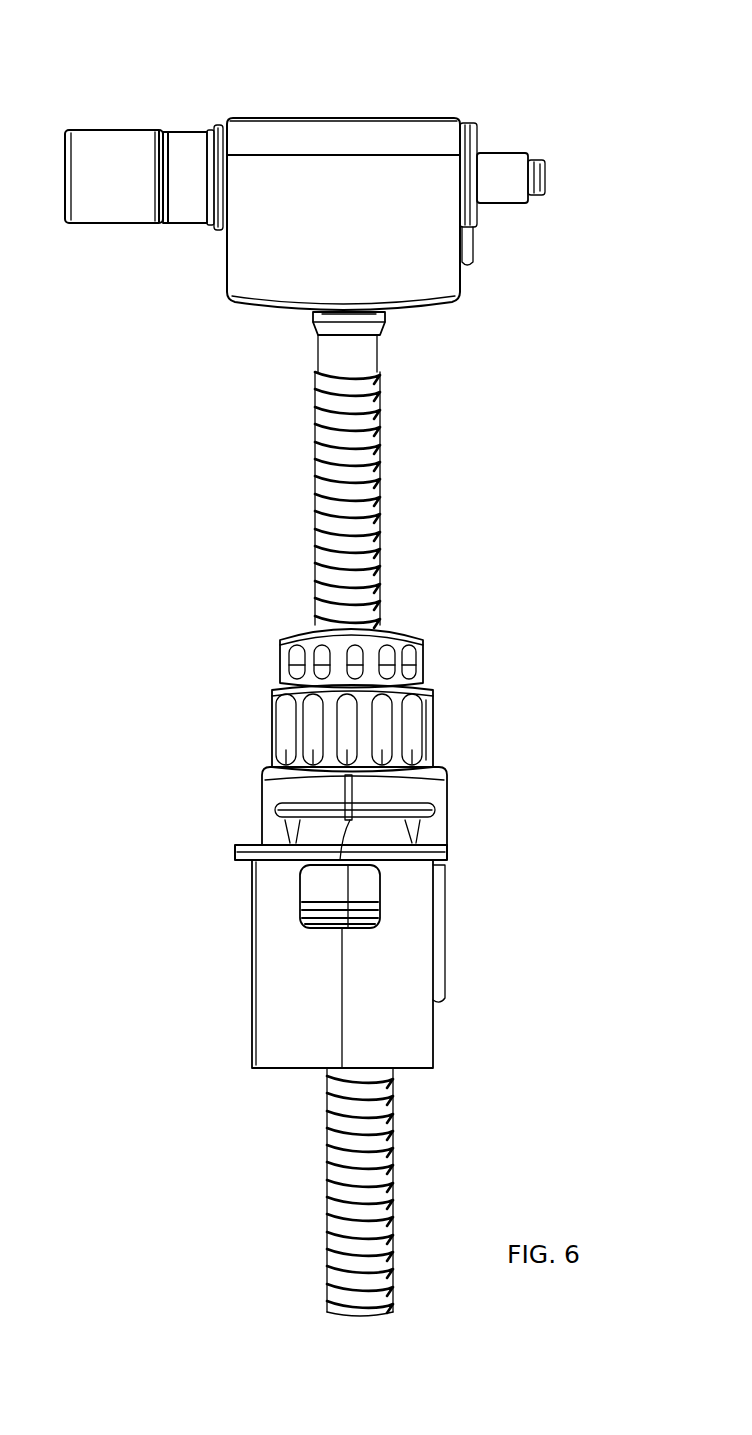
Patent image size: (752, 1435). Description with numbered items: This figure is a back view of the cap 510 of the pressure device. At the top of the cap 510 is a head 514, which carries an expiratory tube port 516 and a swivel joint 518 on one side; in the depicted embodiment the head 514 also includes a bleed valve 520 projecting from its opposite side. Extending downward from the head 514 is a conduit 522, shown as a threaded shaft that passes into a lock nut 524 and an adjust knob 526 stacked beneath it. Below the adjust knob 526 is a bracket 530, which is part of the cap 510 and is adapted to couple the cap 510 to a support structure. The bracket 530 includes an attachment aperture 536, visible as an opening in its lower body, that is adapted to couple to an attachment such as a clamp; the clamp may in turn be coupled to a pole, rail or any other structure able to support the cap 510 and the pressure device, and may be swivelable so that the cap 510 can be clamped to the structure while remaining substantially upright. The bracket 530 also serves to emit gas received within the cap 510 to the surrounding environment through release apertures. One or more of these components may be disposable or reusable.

The cap 510 is at (373, 30).
The head 514 is at (333, 117).
The expiratory tube port 516 is at (100, 224).
The swivel joint 518 is at (176, 224).
The bleed valve 520 is at (497, 152).
The conduit 522 is at (370, 350).
The lock nut 524 is at (412, 636).
The adjust knob 526 is at (435, 731).
The bracket 530 is at (447, 787).
The attachment aperture 536 is at (360, 890).